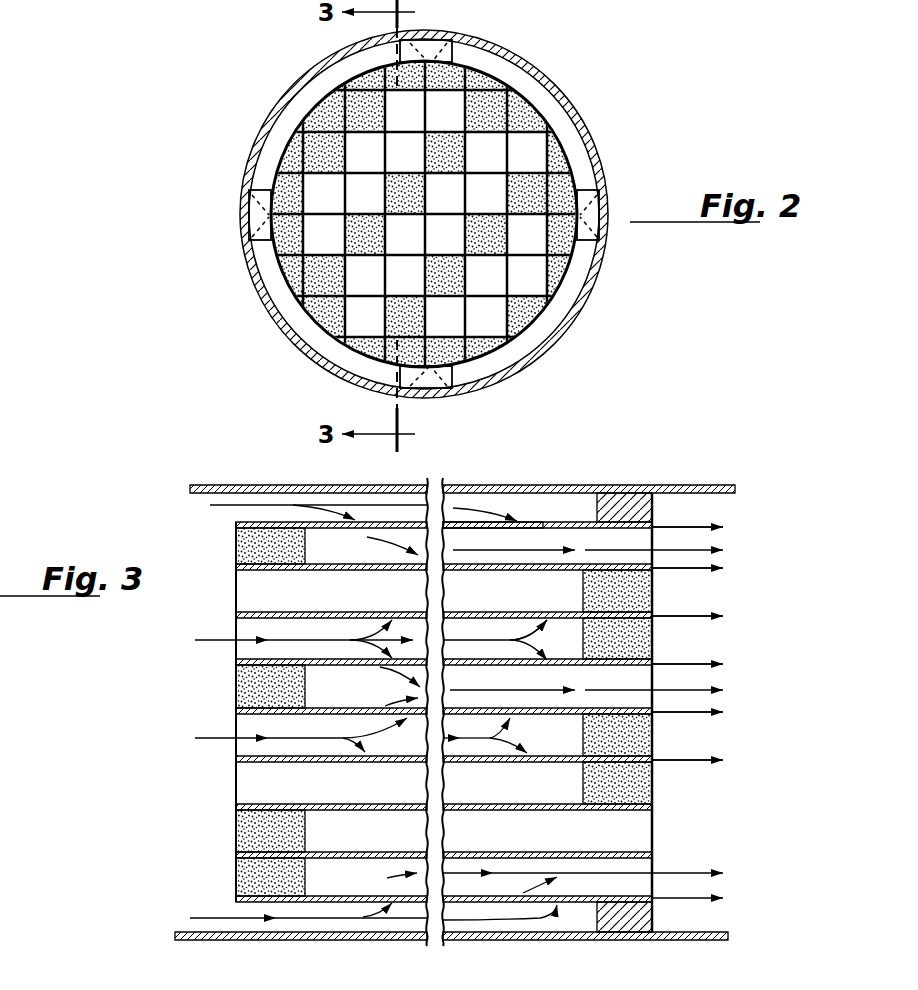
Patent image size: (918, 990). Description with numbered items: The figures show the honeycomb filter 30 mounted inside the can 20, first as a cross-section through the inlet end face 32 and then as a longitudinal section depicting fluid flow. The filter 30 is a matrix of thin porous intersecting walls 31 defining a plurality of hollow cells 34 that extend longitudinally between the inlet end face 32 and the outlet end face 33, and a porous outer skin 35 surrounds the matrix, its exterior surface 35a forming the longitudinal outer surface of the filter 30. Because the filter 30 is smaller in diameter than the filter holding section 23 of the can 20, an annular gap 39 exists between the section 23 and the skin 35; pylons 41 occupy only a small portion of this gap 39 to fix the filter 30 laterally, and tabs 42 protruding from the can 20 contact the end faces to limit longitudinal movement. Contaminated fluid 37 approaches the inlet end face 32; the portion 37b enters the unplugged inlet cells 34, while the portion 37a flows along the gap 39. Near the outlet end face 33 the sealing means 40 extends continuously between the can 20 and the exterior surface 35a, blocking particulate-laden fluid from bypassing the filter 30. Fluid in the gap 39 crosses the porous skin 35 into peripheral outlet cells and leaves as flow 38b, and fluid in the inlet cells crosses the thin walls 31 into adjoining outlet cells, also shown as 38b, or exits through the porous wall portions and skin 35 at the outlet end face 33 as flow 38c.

In FIG. 2, the can 20 is at (407, 231).
In FIG. 3, the can 20 is at (474, 670).
In FIG. 2, the filter holding section 23 is at (312, 69).
In FIG. 2, the filter 30 is at (412, 231).
In FIG. 3, the filter 30 is at (422, 685).
In FIG. 2, the thin porous intersecting walls 31 is at (363, 301).
In FIG. 3, the thin porous intersecting walls 31 is at (262, 806).
In FIG. 3, the inlet end face 32 is at (233, 768).
In FIG. 3, the outlet end face 33 is at (653, 786).
In FIG. 2, the cells 34 is at (556, 298).
In FIG. 3, the cells 34 is at (250, 585).
In FIG. 2, the skin 35 is at (290, 282).
In FIG. 3, the skin 35 is at (312, 522).
In FIG. 3, the exterior surface of the skin 35a is at (407, 522).
In FIG. 3, the contaminated fluid 37 is at (583, 510).
In FIG. 3, the contaminated fluid flowing along the gap 37a is at (245, 503).
In FIG. 3, the contaminated fluid entering inlet cells 37b is at (243, 630).
In FIG. 3, the filtered fluid exiting through outlet cells 38b is at (712, 551).
In FIG. 3, the filtered fluid exiting through skin and wall portions at the outlet end face 38c is at (697, 526).
In FIG. 2, the gap 39 is at (532, 95).
In FIG. 3, the gap 39 is at (537, 505).
In FIG. 3, the sealing means 40 is at (640, 492).
In FIG. 2, the pylons 41 is at (453, 48).
In FIG. 2, the tabs 42 is at (530, 272).